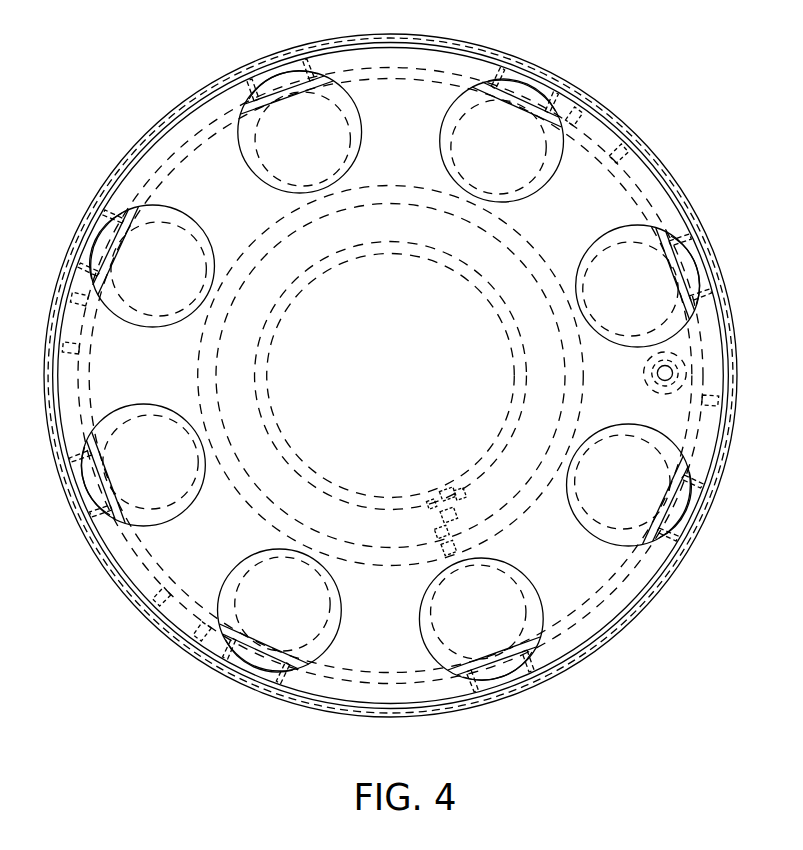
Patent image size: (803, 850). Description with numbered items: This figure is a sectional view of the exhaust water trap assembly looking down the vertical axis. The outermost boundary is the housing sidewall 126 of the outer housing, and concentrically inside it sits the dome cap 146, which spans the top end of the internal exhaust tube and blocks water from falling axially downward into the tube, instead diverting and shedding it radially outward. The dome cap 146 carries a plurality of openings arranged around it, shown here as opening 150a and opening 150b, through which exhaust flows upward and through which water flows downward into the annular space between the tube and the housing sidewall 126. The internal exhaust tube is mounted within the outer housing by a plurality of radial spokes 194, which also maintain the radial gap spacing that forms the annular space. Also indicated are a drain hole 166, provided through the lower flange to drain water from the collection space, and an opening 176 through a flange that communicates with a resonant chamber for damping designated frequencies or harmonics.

The housing sidewall 126 is at (686, 205).
The dome cap 146 is at (373, 378).
The opening 150a is at (635, 229).
The opening 150b is at (545, 177).
The drain hole 166 is at (645, 391).
The opening 176 is at (496, 92).
The radial spoke 194 is at (641, 142).